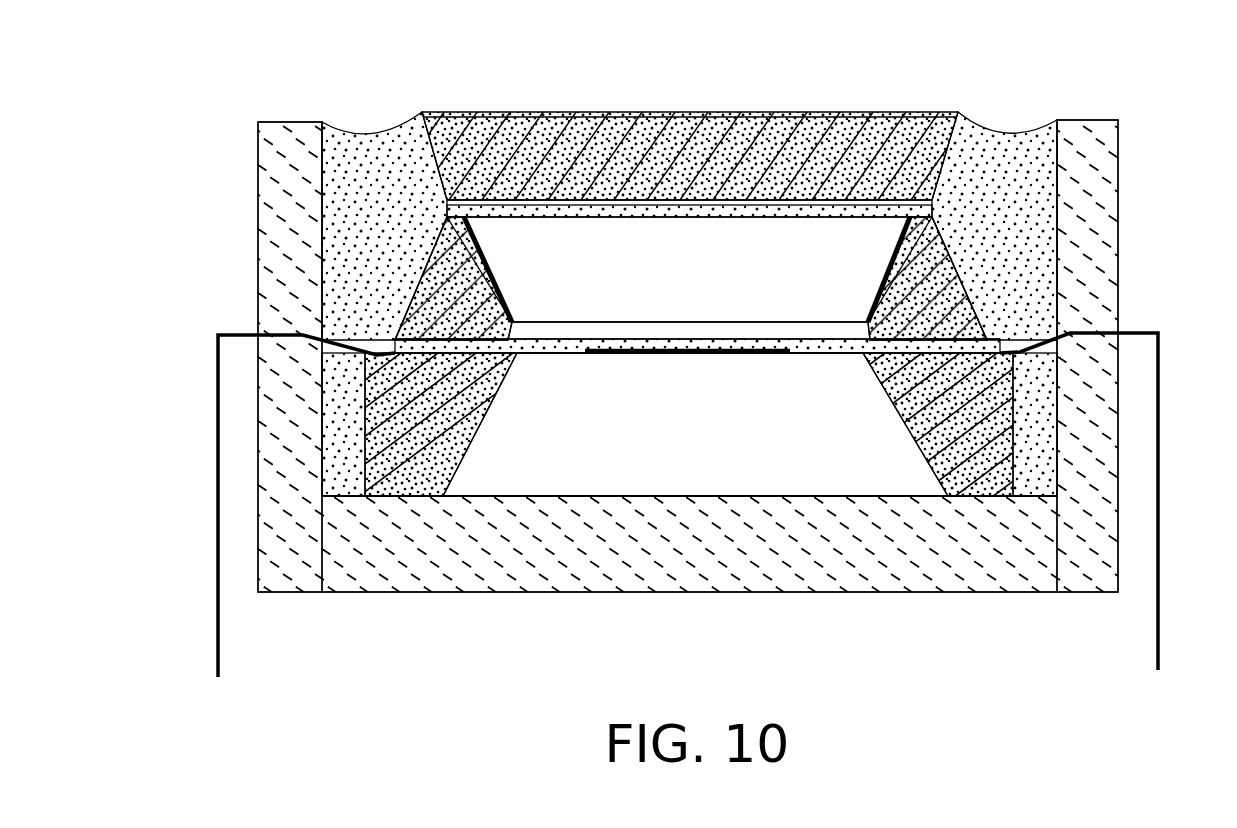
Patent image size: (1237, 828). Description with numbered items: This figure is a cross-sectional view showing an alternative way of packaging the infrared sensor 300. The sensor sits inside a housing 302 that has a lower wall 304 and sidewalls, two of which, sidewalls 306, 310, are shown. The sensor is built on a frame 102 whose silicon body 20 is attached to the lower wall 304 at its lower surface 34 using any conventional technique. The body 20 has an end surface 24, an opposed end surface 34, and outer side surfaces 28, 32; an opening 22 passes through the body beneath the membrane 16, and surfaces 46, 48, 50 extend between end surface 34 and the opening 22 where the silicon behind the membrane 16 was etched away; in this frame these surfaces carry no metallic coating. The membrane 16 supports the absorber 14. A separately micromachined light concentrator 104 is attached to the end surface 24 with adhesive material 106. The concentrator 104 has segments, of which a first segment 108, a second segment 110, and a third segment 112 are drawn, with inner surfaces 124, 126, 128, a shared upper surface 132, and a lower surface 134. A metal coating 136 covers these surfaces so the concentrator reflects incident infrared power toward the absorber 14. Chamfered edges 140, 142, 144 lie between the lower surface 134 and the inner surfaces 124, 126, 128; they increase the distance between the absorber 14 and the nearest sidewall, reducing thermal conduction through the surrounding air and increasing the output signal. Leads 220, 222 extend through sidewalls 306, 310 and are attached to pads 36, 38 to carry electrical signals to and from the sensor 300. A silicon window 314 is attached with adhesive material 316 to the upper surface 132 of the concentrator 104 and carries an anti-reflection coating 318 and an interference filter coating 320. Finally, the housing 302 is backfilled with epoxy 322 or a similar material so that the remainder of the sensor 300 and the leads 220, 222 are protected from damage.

The absorber 14 is at (791, 349).
The membrane 16 is at (791, 349).
The body 20 is at (1113, 433).
The opening 22 is at (791, 341).
The end surface 24 is at (1063, 226).
The outer side surface 28 is at (1047, 418).
The outer side surface 32 is at (367, 425).
The opposed end surface 34 is at (397, 497).
The pad 36 is at (1000, 350).
The pad 38 is at (345, 340).
The surface 46 is at (930, 470).
The surface 48 is at (662, 446).
The surface 50 is at (440, 473).
The frame 102 is at (1030, 200).
The light concentrator 104 is at (1063, 193).
The adhesive material 106 is at (791, 336).
The first segment 108 is at (880, 278).
The second segment 110 is at (652, 237).
The third segment 112 is at (490, 278).
The inner surface 124 is at (676, 120).
The inner surface 126 is at (697, 263).
The inner surface 128 is at (676, 120).
The upper surface 132 is at (676, 120).
The lower surface 134 is at (938, 494).
The metal coating 136 is at (880, 278).
The chamfered edge 140 is at (870, 333).
The chamfered edge 142 is at (617, 330).
The chamfered edge 144 is at (478, 312).
The lead 220 is at (1158, 620).
The lead 222 is at (218, 642).
The infrared sensor 300 is at (1066, 193).
The housing 302 is at (707, 350).
The lower wall 304 is at (650, 570).
The sidewall 306 is at (1107, 550).
The sidewall 310 is at (282, 168).
The silicon window 314 is at (907, 112).
The adhesive material 316 is at (1063, 193).
The anti-reflection coating 318 is at (676, 120).
The interference filter coating 320 is at (689, 159).
The epoxy 322 is at (327, 197).